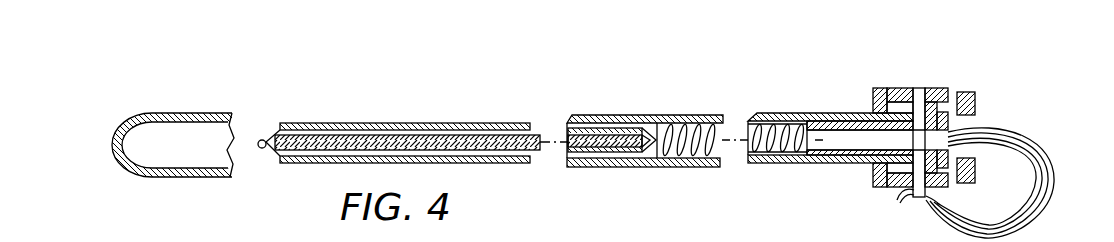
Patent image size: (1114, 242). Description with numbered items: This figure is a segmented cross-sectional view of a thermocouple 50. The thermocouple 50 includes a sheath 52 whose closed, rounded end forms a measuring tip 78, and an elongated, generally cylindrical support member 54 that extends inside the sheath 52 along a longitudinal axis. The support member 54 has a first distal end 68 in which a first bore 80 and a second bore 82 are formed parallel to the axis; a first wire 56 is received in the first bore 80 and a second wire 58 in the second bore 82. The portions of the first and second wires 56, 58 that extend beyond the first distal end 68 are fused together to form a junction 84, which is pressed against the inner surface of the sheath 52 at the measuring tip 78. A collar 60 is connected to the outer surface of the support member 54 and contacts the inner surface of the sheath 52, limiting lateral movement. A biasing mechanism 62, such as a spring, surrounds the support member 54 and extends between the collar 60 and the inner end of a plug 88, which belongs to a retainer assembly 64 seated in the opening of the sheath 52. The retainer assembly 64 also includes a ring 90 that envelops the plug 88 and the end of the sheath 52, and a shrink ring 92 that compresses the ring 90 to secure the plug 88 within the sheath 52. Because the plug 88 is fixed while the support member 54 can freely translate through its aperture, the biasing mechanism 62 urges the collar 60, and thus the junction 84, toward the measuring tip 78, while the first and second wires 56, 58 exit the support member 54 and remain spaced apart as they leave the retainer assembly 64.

The thermocouple 50 is at (438, 95).
The sheath 52 is at (182, 114).
The support member 54 is at (388, 135).
The first wire 56 is at (1045, 152).
The second wire 58 is at (1044, 180).
The collar 60 is at (648, 122).
The biasing mechanism 62 is at (707, 125).
The retainer assembly 64 is at (876, 89).
The first distal end 68 is at (278, 123).
The measuring tip 78 is at (112, 150).
The first bore 80 is at (477, 124).
The second bore 82 is at (480, 159).
The junction 84 is at (262, 148).
The plug 88 is at (905, 107).
The ring 90 is at (950, 90).
The shrink ring 92 is at (920, 198).